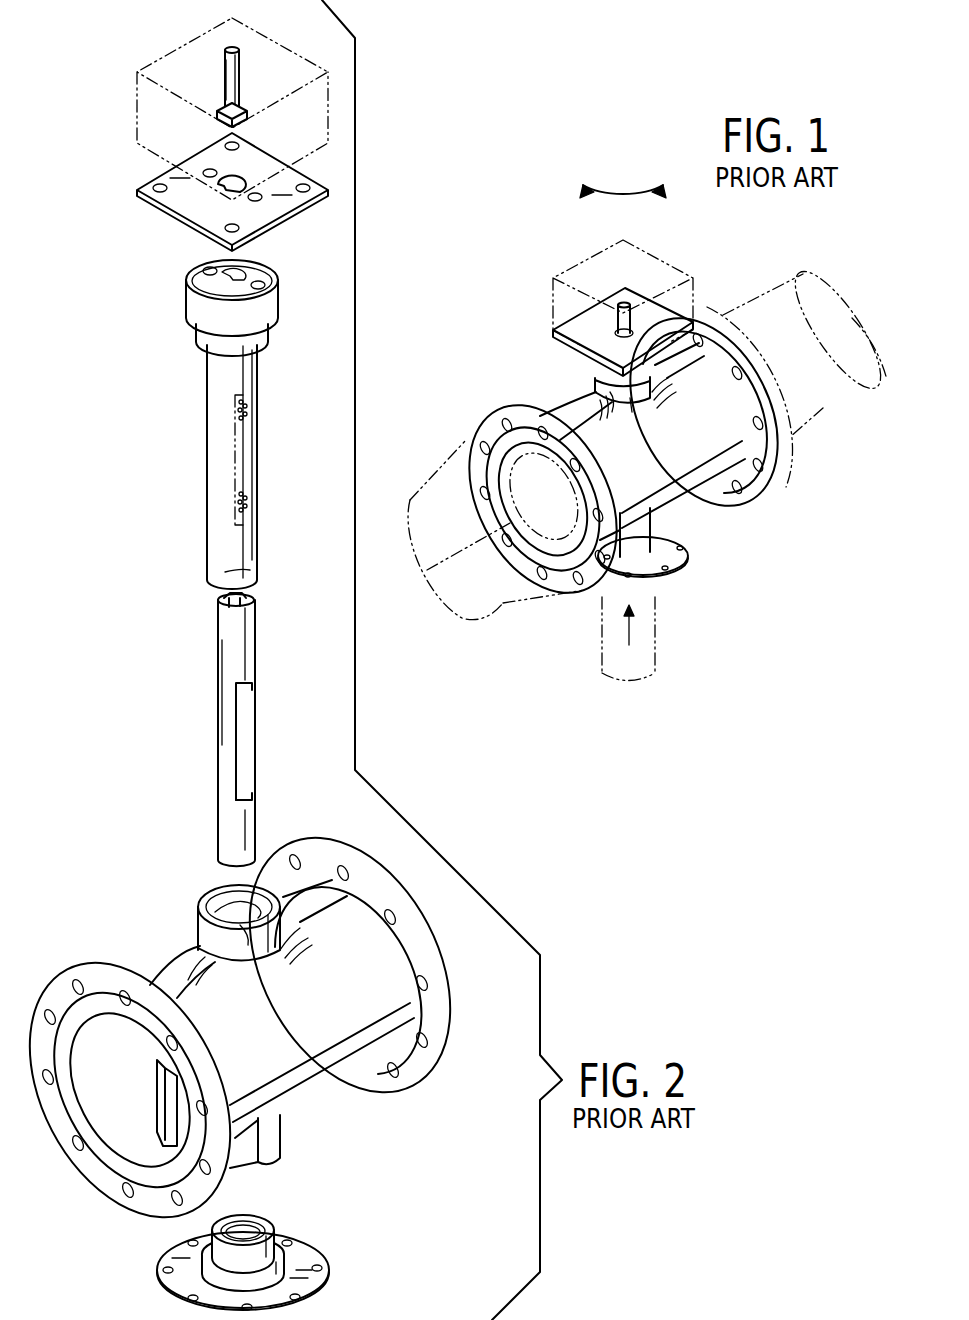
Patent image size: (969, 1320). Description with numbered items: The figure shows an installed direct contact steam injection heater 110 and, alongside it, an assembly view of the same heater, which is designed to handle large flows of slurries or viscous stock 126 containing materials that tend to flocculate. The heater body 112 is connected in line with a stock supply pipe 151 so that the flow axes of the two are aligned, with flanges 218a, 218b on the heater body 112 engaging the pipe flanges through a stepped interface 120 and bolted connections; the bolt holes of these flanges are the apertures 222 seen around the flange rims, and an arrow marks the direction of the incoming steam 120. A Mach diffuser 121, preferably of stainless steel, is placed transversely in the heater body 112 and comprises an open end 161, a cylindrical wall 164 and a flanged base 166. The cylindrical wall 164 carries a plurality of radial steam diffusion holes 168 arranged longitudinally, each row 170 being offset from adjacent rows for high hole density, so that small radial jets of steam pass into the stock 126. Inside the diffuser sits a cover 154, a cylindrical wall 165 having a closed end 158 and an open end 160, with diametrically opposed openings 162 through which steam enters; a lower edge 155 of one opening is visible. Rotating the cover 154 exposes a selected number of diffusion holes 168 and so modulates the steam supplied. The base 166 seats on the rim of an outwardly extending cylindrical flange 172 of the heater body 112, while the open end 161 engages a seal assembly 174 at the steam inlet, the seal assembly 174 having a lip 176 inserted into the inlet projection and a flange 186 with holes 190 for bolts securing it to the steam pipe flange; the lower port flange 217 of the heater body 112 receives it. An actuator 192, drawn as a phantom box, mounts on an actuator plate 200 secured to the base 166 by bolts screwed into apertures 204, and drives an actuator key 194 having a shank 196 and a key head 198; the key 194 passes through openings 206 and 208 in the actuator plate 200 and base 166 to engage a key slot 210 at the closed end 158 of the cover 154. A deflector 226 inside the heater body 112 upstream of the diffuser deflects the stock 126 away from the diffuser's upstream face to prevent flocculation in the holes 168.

In FIG. 1, the heater 110 is at (547, 176).
In FIG. 2, the heater body 112 is at (253, 1028).
In FIG. 1, the heater body 112 is at (616, 430).
In FIG. 1, the steam 120 is at (650, 653).
In FIG. 2, the Mach diffuser 121 is at (227, 576).
In FIG. 1, the stock 126 is at (480, 541).
In FIG. 1, the stock supply pipe 151 is at (503, 605).
In FIG. 2, the cover 154 is at (237, 729).
In FIG. 2, the slot lower end 155 is at (250, 784).
In FIG. 2, the closed end 158 is at (240, 621).
In FIG. 2, the open end 160 is at (246, 838).
In FIG. 2, the open end 161 is at (240, 571).
In FIG. 2, the openings 162 is at (250, 690).
In FIG. 2, the cylindrical wall 164 is at (235, 455).
In FIG. 2, the shaft body 165 is at (222, 742).
In FIG. 2, the flanged base 166 is at (262, 310).
In FIG. 1, the flanged base 166 is at (596, 371).
In FIG. 2, the steam diffusion holes 168 is at (252, 494).
In FIG. 2, the row 170 is at (250, 396).
In FIG. 2, the cylindrical flange 172 is at (248, 944).
In FIG. 1, the cylindrical flange 172 is at (641, 402).
In FIG. 2, the seal assembly 174 is at (263, 1258).
In FIG. 2, the lip 176 is at (258, 1250).
In FIG. 2, the flange 186 is at (305, 1286).
In FIG. 2, the holes 190 is at (162, 1269).
In FIG. 2, the actuator 192 is at (182, 58).
In FIG. 1, the actuator 192 is at (575, 262).
In FIG. 2, the actuator key 194 is at (222, 78).
In FIG. 2, the shank 196 is at (240, 66).
In FIG. 1, the shank 196 is at (668, 316).
In FIG. 2, the key head 198 is at (245, 114).
In FIG. 2, the actuator plate 200 is at (282, 216).
In FIG. 2, the apertures 204 is at (255, 202).
In FIG. 2, the opening 206 is at (217, 184).
In FIG. 2, the opening 208 is at (218, 278).
In FIG. 2, the key slot 210 is at (222, 606).
In FIG. 1, the bottom port flange 217 is at (762, 465).
In FIG. 1, the flange 218a is at (483, 455).
In FIG. 1, the flange 218b is at (737, 370).
In FIG. 2, the flange bolt holes 222 is at (78, 985).
In FIG. 2, the deflector 226 is at (157, 1106).